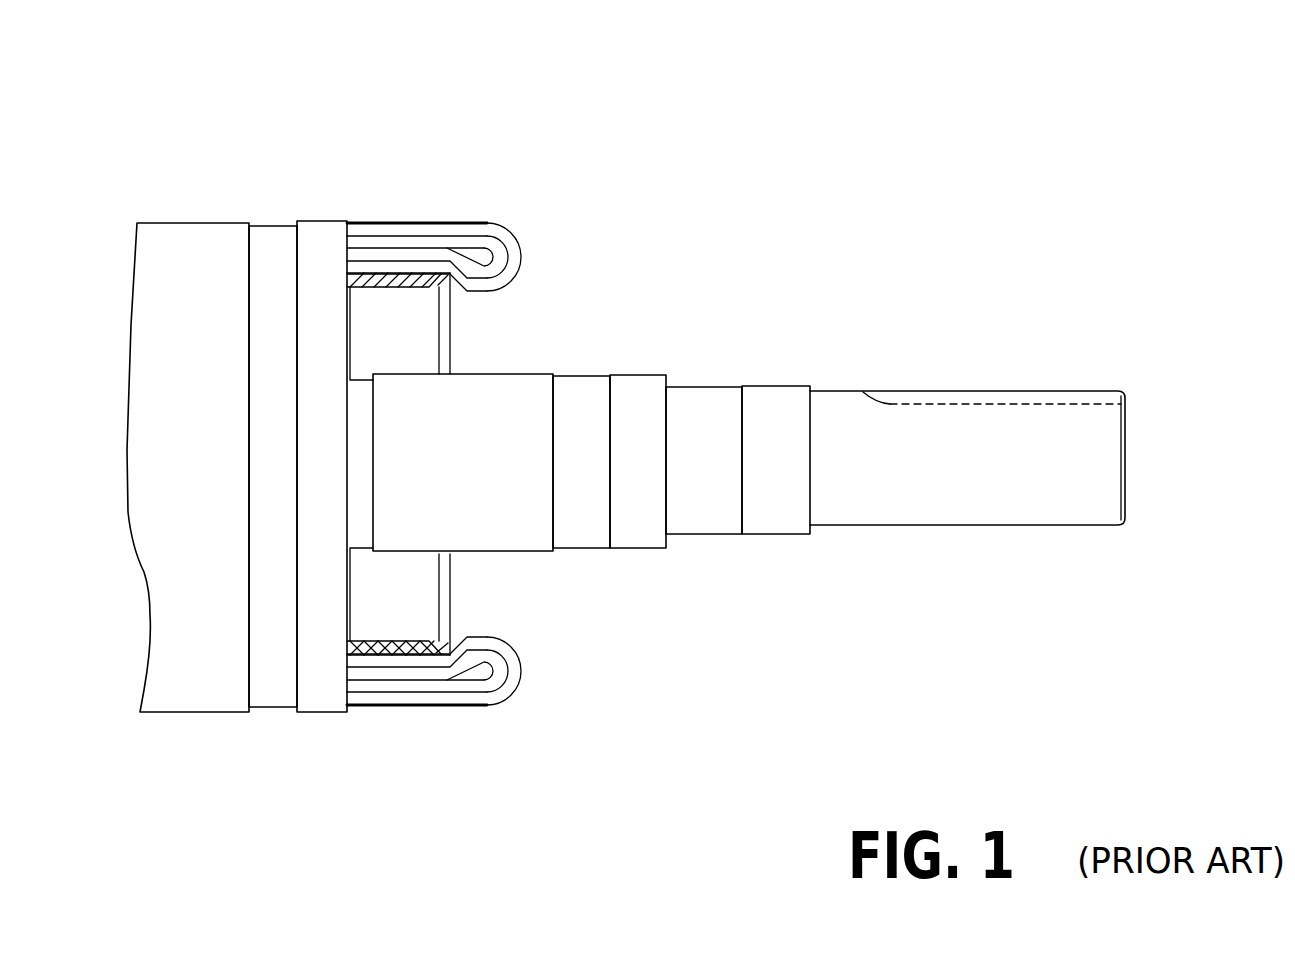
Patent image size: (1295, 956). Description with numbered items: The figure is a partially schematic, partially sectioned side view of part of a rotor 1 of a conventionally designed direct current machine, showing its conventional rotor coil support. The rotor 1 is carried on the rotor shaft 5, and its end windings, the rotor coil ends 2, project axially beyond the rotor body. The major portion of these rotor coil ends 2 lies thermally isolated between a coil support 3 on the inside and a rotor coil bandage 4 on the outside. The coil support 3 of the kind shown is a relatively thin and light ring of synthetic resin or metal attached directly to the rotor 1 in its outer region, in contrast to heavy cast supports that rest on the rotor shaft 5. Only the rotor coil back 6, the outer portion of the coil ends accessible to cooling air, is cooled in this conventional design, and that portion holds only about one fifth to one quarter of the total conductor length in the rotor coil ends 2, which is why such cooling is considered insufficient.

The rotor 1 is at (217, 223).
The rotor coil ends 2 is at (507, 665).
The coil support 3 is at (392, 658).
The rotor coil bandage 4 is at (466, 196).
The rotor shaft 5 is at (695, 410).
The rotor coil back 6 is at (517, 240).